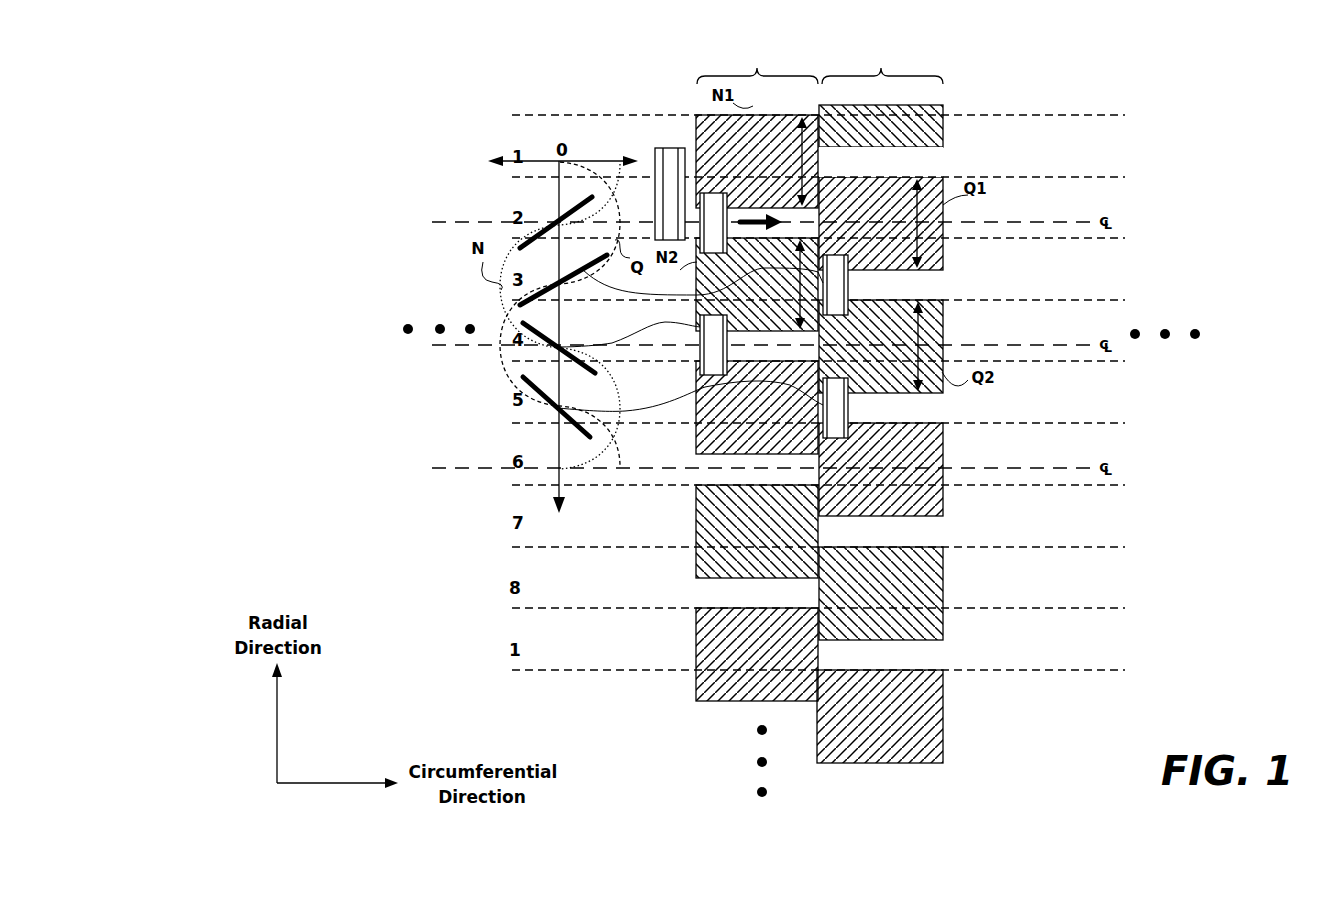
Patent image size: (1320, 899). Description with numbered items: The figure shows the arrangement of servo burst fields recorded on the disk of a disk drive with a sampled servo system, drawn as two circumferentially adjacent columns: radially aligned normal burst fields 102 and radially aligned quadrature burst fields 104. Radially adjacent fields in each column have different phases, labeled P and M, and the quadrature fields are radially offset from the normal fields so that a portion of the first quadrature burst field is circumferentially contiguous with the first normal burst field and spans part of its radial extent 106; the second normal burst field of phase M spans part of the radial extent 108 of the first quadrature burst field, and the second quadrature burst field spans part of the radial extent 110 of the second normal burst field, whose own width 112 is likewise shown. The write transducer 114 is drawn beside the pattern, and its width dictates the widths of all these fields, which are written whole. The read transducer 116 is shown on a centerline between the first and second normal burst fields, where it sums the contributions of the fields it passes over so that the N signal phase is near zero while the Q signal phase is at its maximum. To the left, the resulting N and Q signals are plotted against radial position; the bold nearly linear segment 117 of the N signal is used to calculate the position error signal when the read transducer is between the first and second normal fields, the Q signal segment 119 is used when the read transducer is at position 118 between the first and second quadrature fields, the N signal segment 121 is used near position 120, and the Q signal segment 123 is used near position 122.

The normal burst fields 102 is at (718, 47).
The quadrature burst fields 104 is at (917, 394).
The radial extent of the first normal burst field 106 is at (820, 163).
The radial extent of the first quadrature burst field 108 is at (943, 240).
The radial extent of the second normal burst field 110 is at (776, 286).
The width of the second quadrature burst field 112 is at (942, 318).
The write transducer 114 is at (656, 164).
The read transducer 116 is at (712, 193).
The segment of the N signal 117 is at (574, 203).
The read transducer position between Q1 and Q2 118 is at (852, 287).
The segment of the Q signal 119 is at (580, 268).
The read transducer position 120 is at (697, 355).
The segment of the N signal 121 is at (543, 332).
The read transducer position 122 is at (852, 405).
The segment of the Q signal 123 is at (543, 390).